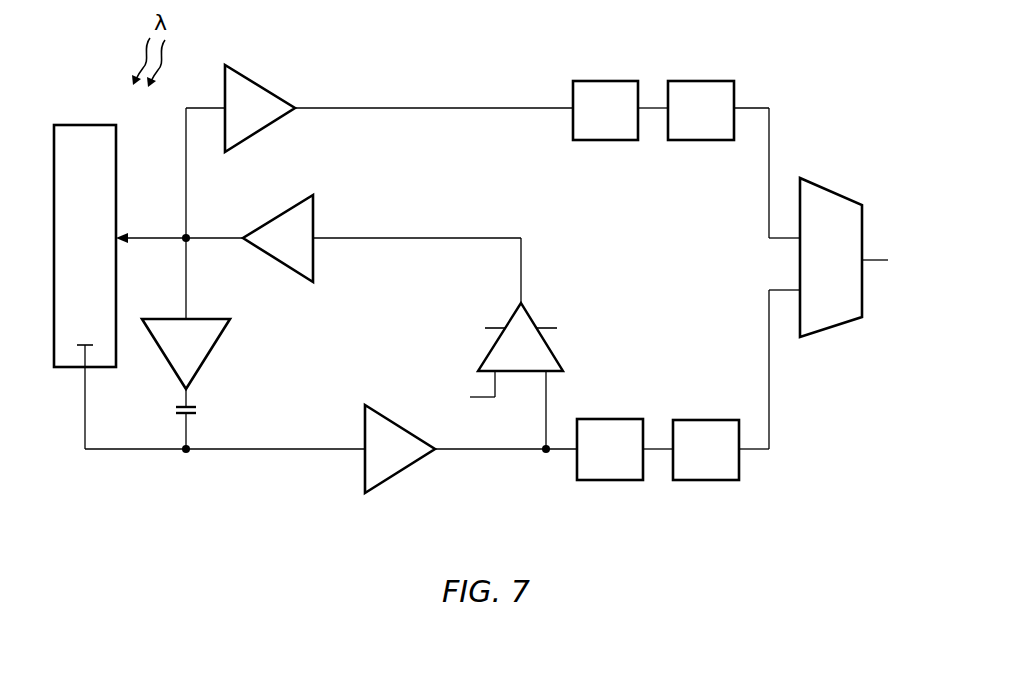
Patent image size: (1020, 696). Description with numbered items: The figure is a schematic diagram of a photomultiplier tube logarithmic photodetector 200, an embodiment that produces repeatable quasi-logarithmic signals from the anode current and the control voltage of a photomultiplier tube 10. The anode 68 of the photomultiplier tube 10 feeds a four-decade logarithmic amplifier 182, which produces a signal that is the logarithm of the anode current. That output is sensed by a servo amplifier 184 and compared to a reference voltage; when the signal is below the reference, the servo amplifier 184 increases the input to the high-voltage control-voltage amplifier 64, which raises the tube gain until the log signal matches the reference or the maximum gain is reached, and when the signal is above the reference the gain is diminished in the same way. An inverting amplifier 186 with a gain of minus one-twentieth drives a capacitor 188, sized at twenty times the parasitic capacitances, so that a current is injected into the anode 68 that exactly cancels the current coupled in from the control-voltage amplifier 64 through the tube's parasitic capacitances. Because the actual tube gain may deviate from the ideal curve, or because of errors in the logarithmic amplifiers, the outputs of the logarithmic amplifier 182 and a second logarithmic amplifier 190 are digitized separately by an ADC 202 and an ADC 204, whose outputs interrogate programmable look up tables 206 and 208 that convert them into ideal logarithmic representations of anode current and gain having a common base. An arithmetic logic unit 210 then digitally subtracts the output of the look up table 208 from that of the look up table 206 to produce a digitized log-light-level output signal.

The photomultiplier tube 10 is at (86, 125).
The control-voltage amplifier 64 is at (317, 215).
The anode 68 is at (88, 372).
The logarithmic amplifier 182 is at (407, 470).
The servo amplifier 184 is at (511, 312).
The inverting amplifier 186 is at (215, 345).
The capacitor 188 is at (205, 410).
The logarithmic amplifier 190 is at (258, 82).
The logarithmic photodetector 200 is at (775, 479).
The ADC 202 is at (607, 418).
The ADC 204 is at (605, 80).
The programmable look up table 206 is at (705, 418).
The programmable look up table 208 is at (700, 80).
The arithmetic logic unit 210 is at (836, 192).